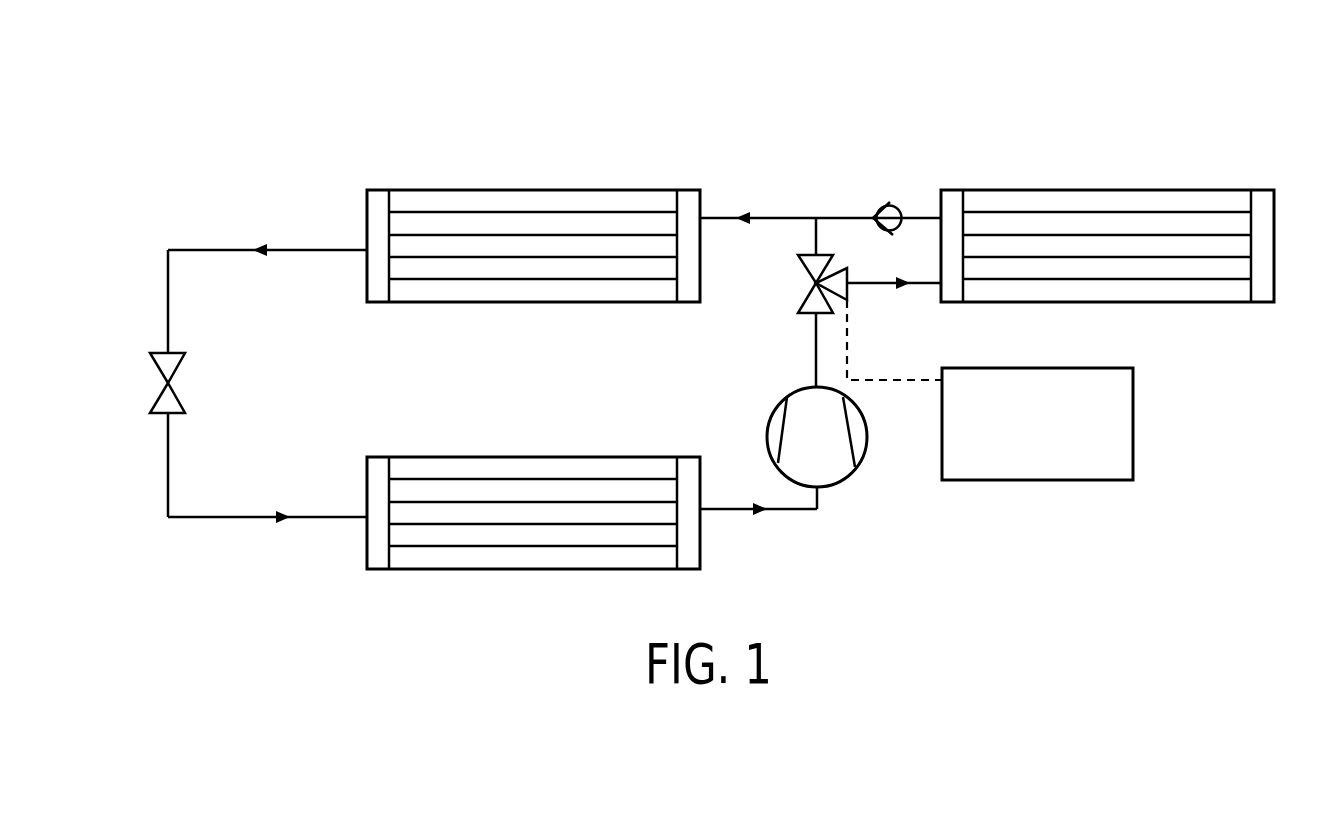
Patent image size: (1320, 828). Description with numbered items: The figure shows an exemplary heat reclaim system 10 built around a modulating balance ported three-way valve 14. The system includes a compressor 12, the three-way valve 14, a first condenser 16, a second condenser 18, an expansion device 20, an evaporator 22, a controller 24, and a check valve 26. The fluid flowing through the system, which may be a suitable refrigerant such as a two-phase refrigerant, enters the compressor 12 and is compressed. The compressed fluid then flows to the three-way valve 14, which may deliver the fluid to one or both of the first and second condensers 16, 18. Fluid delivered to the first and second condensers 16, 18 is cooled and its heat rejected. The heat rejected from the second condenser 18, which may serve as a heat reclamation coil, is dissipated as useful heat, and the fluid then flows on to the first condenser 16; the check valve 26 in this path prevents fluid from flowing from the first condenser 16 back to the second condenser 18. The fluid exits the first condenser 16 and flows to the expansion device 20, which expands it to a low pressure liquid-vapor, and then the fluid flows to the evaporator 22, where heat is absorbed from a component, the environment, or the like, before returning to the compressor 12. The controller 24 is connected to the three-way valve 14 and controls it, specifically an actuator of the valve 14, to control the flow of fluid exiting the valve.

The heat reclaim system 10 is at (1255, 125).
The compressor 12 is at (845, 473).
The modulating balance ported three-way valve 14 is at (806, 301).
The first condenser 16 is at (527, 190).
The second condenser 18 is at (1103, 190).
The expansion device 20 is at (163, 398).
The evaporator 22 is at (535, 572).
The controller 24 is at (1133, 411).
The check valve 26 is at (888, 200).